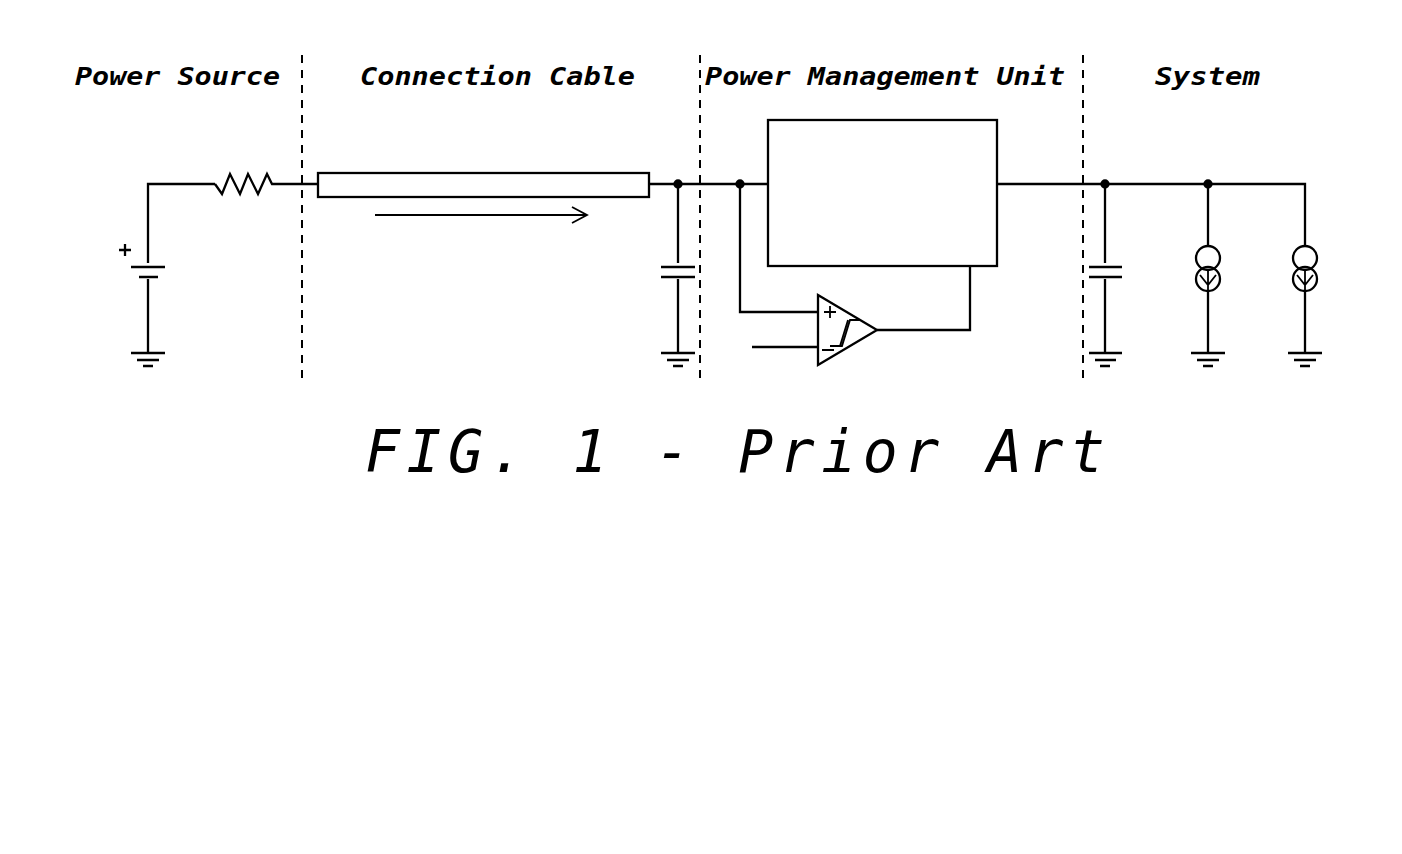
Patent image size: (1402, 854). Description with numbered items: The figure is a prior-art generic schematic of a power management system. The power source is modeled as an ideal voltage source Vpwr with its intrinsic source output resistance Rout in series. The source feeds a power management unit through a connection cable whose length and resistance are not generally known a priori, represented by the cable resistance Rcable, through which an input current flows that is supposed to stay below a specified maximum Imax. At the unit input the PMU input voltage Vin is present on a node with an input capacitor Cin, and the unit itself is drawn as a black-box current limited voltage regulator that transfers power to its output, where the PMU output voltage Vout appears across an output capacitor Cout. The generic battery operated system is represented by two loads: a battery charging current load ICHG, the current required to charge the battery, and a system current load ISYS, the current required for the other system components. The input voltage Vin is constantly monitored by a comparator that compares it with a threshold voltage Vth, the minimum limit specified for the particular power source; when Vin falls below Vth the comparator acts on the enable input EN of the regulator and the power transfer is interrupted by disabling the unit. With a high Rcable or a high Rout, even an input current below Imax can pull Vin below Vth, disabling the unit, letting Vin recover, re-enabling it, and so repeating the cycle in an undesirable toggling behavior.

The source output resistance Rout is at (265, 167).
The ideal voltage source Vpwr is at (167, 275).
The cable resistance Rcable is at (543, 165).
The specified maximum input current Imax is at (481, 230).
The input capacitor Cin is at (661, 275).
The PMU input voltage Vin is at (761, 228).
The enable input EN is at (882, 193).
The threshold voltage Vth is at (861, 315).
The PMU output voltage Vout is at (1151, 195).
The output capacitor Cout is at (1128, 275).
The battery charging current load ICHG is at (1238, 275).
The system current load ISYS is at (1335, 304).